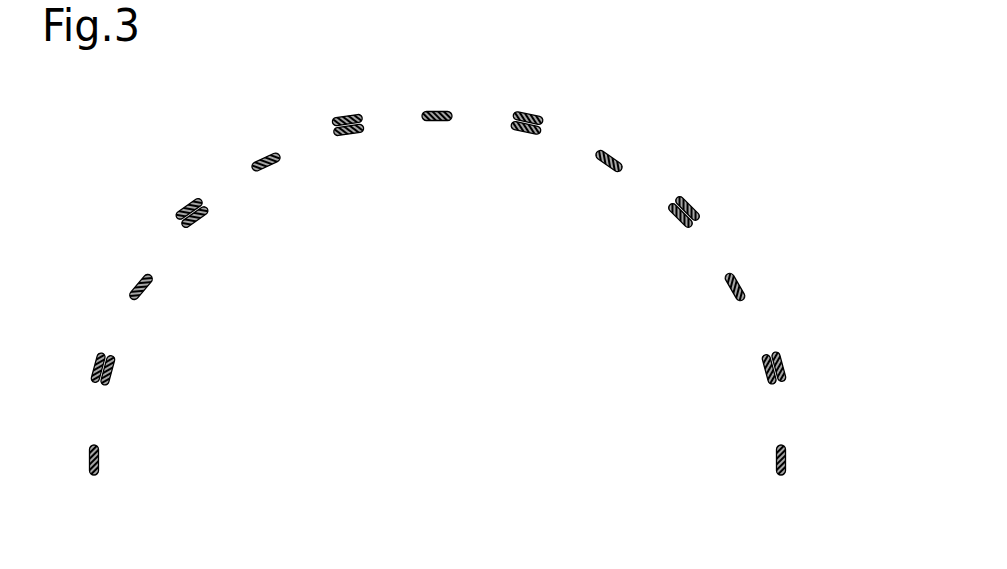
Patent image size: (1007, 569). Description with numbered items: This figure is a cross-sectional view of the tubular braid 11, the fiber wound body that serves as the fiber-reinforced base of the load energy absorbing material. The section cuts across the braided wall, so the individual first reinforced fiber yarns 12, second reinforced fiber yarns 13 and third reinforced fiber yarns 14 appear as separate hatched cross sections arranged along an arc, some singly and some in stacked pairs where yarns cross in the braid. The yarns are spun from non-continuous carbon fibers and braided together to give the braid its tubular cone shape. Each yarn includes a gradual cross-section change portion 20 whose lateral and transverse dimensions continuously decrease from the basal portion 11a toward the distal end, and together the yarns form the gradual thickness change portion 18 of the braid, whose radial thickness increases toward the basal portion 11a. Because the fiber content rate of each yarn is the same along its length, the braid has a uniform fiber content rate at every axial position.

The tubular braid 11 is at (693, 205).
The basal portion 11a is at (787, 455).
The first reinforced fiber yarns 12 is at (347, 117).
The second reinforced fiber yarns 13 is at (355, 134).
The third reinforced fiber yarns 14 is at (440, 111).
The gradual thickness change portion 18 is at (626, 152).
The gradual cross-section change portion 20 is at (743, 287).